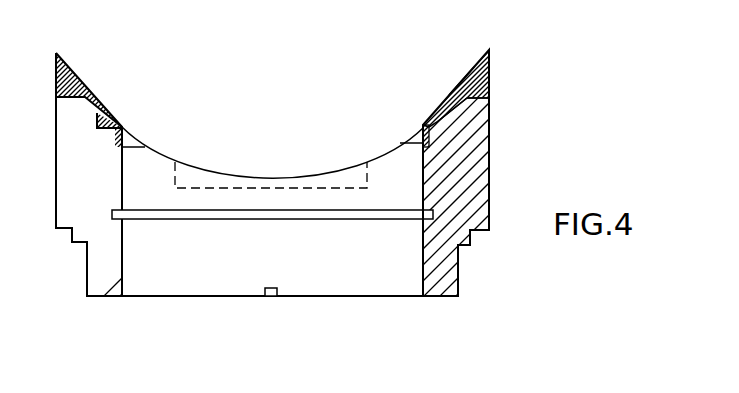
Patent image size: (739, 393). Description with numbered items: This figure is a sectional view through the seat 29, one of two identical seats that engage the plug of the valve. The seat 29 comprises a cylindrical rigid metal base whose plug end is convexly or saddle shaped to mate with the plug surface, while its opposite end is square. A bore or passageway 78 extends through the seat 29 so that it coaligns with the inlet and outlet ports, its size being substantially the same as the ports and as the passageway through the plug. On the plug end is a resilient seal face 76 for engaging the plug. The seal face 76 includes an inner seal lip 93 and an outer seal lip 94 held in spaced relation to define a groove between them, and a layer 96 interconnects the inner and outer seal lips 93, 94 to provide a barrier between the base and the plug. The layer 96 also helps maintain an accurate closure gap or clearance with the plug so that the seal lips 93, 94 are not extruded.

The seat 29 is at (492, 154).
The resilient face 76 is at (464, 70).
The bore or passageway 78 is at (423, 263).
The inner seal lip 93 is at (433, 112).
The outer seal lip 94 is at (477, 65).
The layer 96 is at (457, 95).